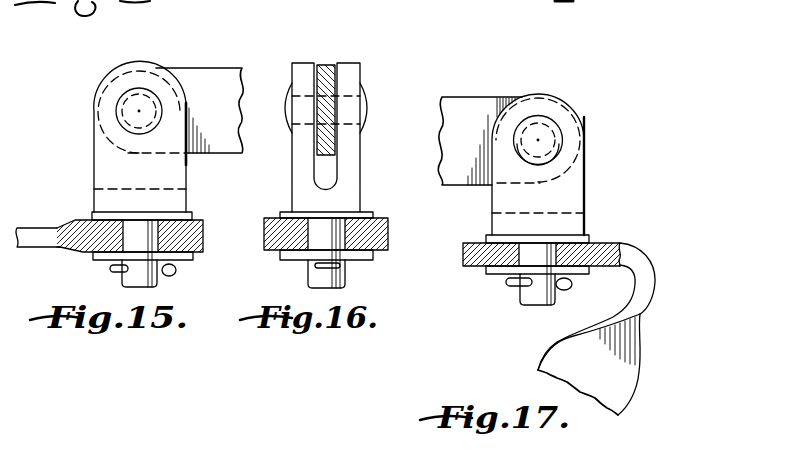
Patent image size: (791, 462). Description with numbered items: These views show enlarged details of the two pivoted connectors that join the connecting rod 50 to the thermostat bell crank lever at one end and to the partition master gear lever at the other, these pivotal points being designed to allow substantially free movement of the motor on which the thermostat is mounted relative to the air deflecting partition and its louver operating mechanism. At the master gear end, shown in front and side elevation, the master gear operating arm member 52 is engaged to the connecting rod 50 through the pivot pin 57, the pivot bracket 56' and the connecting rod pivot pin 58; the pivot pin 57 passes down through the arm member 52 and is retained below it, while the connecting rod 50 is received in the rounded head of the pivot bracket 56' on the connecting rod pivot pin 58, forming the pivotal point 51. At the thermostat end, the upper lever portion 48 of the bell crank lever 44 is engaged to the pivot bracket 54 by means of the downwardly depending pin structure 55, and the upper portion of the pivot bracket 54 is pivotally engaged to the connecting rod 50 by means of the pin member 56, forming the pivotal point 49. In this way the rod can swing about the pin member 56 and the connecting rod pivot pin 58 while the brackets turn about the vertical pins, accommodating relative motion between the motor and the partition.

In FIG. 17, the bell crank lever 44 is at (626, 382).
In FIG. 17, the upper lever portion 48 is at (645, 288).
In FIG. 17, the pivotal point 49 is at (565, 195).
In FIG. 15, the connecting rod 50 is at (208, 80).
In FIG. 16, the connecting rod 50 is at (327, 63).
In FIG. 17, the connecting rod 50 is at (472, 105).
In FIG. 15, the pivotal point 51 is at (107, 172).
In FIG. 16, the pivotal point 51 is at (300, 192).
In FIG. 15, the master gear operating arm member 52 is at (50, 195).
In FIG. 17, the pivot bracket 54 is at (507, 197).
In FIG. 17, the downwardly depending pin structure 55 is at (523, 293).
In FIG. 17, the pin member 56 is at (573, 135).
In FIG. 15, the pivot bracket 56' is at (109, 136).
In FIG. 15, the pivot pin 57 is at (120, 274).
In FIG. 15, the connecting rod pivot pin 58 is at (127, 104).